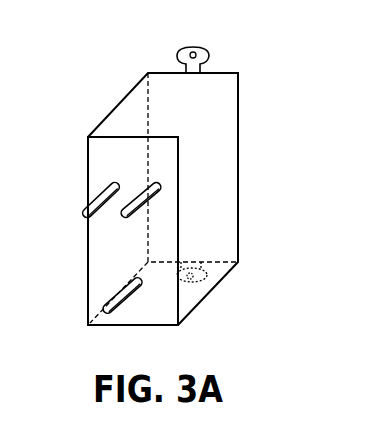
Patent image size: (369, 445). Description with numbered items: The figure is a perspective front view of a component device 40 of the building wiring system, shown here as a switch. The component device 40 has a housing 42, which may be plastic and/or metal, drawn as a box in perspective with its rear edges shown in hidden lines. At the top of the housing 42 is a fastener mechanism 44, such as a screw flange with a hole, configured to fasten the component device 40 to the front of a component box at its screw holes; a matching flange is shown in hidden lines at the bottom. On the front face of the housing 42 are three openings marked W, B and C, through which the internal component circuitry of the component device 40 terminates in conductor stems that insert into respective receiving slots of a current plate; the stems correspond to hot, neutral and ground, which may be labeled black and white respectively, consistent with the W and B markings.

The component device 40 is at (83, 88).
The housing 42 is at (215, 167).
The fastener mechanism 44 is at (208, 58).
The white wire slot W is at (97, 200).
The black wire slot B is at (148, 194).
The center wire slot C is at (98, 302).